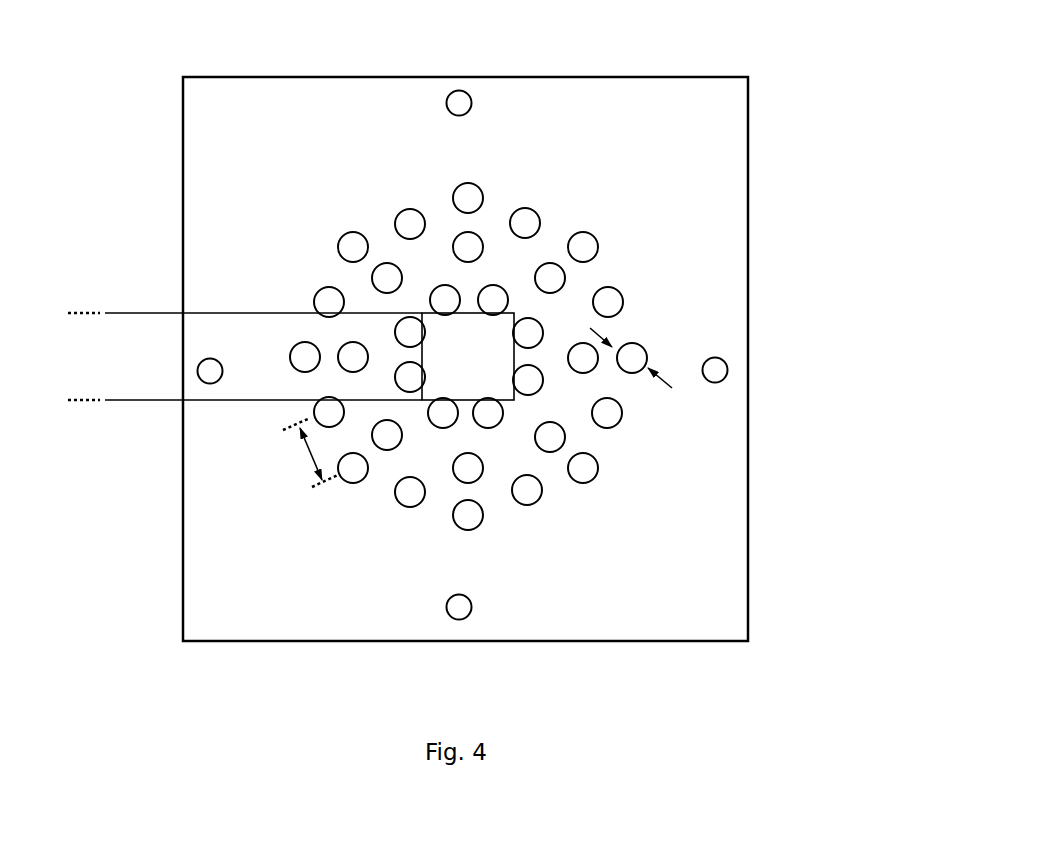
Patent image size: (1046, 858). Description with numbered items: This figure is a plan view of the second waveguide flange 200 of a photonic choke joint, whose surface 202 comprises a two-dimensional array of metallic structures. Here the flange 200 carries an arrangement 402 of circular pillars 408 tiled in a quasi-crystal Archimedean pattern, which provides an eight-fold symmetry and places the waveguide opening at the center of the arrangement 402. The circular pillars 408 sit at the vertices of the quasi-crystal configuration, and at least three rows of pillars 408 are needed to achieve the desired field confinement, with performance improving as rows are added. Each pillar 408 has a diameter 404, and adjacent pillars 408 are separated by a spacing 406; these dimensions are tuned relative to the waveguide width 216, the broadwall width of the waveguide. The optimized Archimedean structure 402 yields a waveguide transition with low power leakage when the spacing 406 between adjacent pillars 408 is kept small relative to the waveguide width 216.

The second waveguide flange 200 is at (605, 43).
The surface 202 is at (702, 133).
The waveguide width 216 is at (85, 316).
The arrangement of circular pillars 402 is at (232, 163).
The diameter 404 is at (700, 402).
The spacing 406 is at (263, 480).
The circular pillars 408 is at (603, 410).